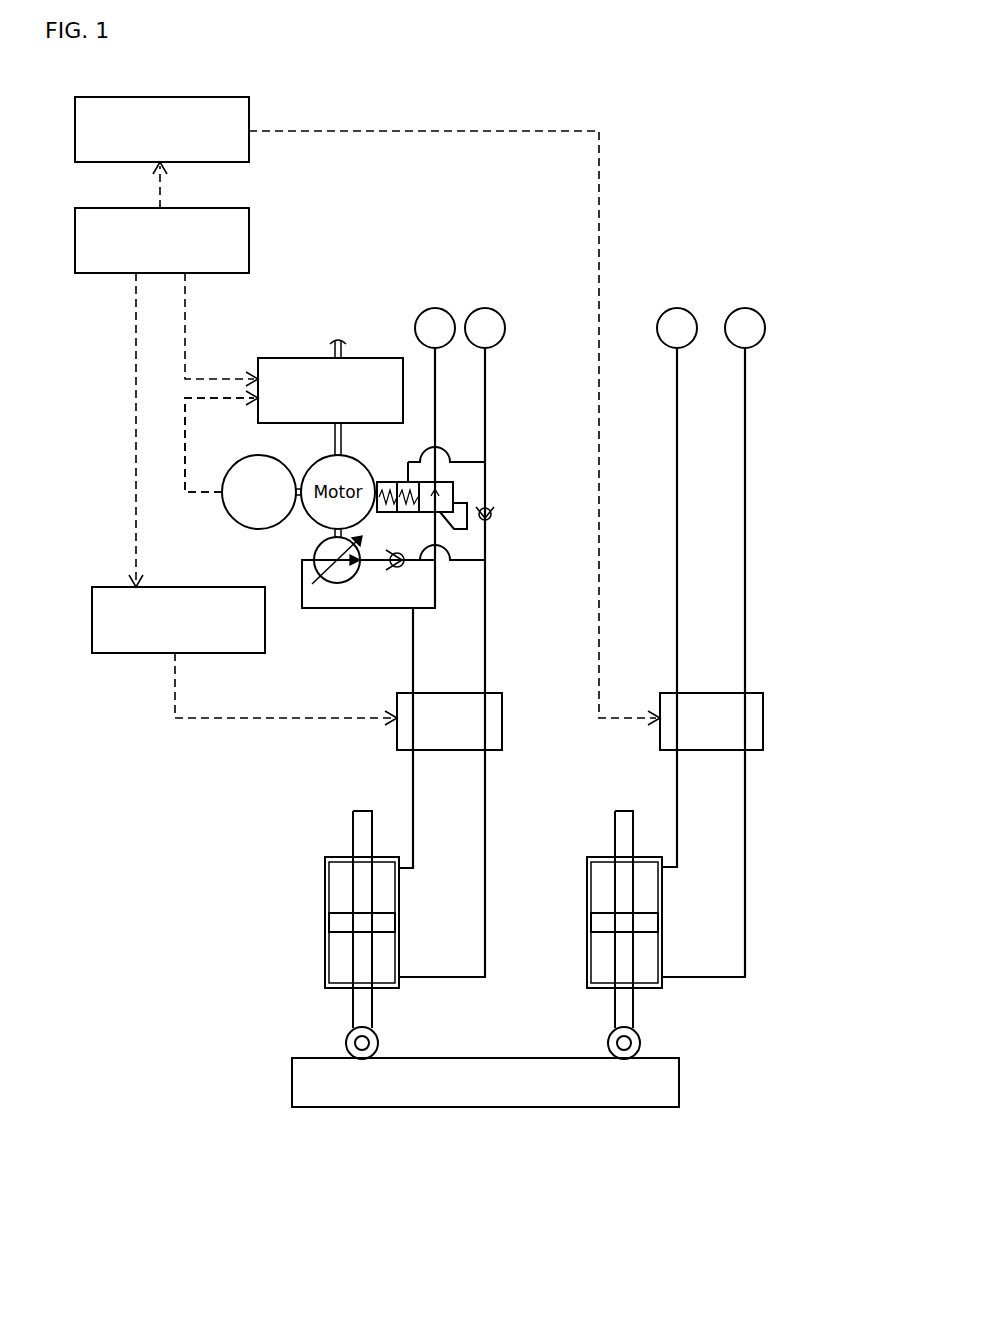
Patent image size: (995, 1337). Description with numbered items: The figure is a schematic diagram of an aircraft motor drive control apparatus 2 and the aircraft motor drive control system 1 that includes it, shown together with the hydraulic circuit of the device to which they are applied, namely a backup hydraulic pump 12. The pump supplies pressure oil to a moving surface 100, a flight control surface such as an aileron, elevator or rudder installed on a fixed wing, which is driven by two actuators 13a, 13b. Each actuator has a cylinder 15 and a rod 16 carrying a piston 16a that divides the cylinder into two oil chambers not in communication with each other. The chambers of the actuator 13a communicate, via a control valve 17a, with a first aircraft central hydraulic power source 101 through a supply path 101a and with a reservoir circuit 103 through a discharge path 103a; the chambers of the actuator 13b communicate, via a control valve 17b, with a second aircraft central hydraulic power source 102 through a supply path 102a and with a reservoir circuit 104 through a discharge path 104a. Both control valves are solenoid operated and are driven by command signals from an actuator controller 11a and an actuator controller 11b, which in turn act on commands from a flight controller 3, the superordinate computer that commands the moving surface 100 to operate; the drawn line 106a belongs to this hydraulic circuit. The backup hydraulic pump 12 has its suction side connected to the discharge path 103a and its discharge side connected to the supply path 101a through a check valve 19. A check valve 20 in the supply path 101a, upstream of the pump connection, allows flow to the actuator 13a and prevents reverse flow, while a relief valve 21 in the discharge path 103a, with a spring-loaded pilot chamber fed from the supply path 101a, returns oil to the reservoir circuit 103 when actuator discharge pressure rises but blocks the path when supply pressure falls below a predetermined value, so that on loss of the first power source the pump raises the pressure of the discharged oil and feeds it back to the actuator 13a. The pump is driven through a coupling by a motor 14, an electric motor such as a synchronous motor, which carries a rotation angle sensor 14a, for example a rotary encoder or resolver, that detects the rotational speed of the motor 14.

The aircraft motor drive control system 1 is at (226, 240).
The aircraft motor drive control apparatus 2 is at (318, 358).
The flight controller 3 is at (249, 235).
The actuator controller 11a is at (152, 653).
The actuator controller 11b is at (249, 152).
The backup hydraulic pump 12 is at (322, 540).
The actuator 13a is at (412, 960).
The actuator 13b is at (672, 1002).
The motor 14 is at (300, 462).
The rotation angle sensor 14a is at (227, 465).
The cylinder 15 is at (326, 895).
The rod 16 is at (493, 935).
The piston 16a is at (342, 922).
The control valve 17a is at (503, 703).
The control valve 17b is at (764, 712).
The check valve 19 is at (387, 578).
The check valve 20 is at (500, 502).
The relief valve 21 is at (462, 484).
The moving surface 100 is at (470, 1090).
The first aircraft central hydraulic power source 101 is at (488, 307).
The supply path 101a is at (487, 378).
The second aircraft central hydraulic power source 102 is at (748, 307).
The supply path 102a is at (747, 478).
The reservoir circuit 103 is at (434, 307).
The discharge path 103a is at (433, 372).
The reservoir circuit 104 is at (677, 307).
The discharge path 104a is at (675, 482).
The hydraulic line 106a is at (412, 631).